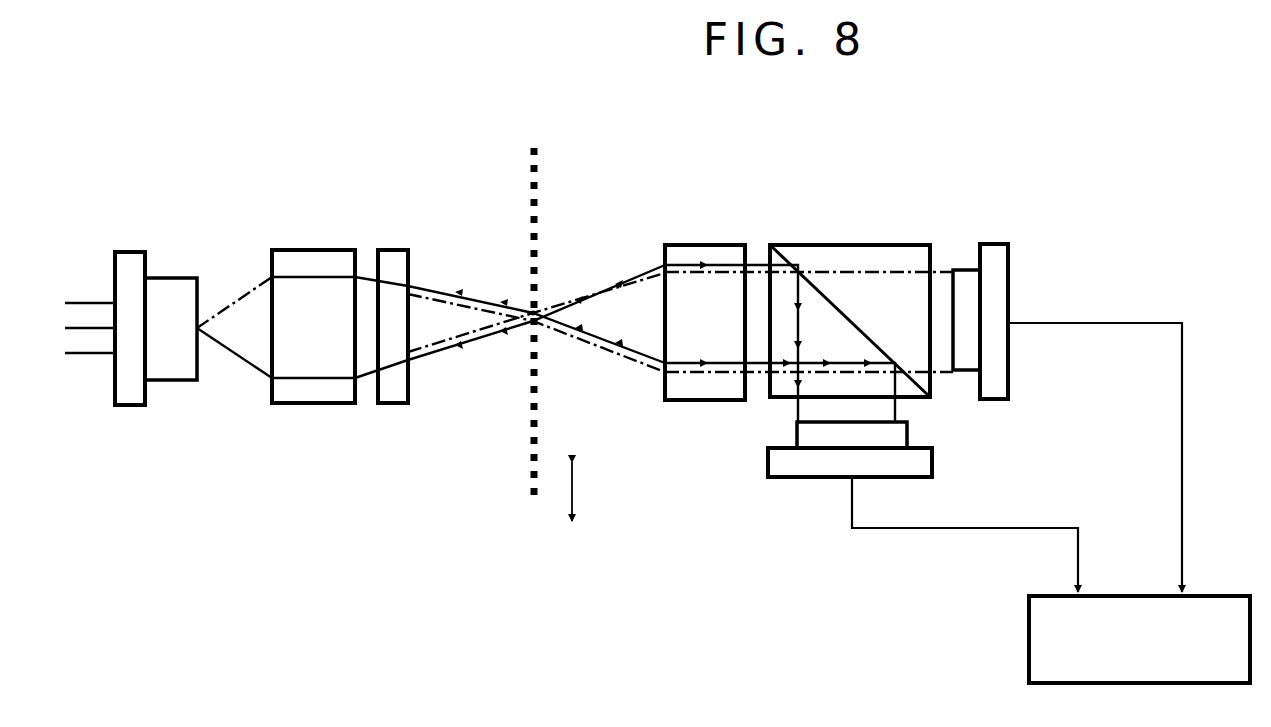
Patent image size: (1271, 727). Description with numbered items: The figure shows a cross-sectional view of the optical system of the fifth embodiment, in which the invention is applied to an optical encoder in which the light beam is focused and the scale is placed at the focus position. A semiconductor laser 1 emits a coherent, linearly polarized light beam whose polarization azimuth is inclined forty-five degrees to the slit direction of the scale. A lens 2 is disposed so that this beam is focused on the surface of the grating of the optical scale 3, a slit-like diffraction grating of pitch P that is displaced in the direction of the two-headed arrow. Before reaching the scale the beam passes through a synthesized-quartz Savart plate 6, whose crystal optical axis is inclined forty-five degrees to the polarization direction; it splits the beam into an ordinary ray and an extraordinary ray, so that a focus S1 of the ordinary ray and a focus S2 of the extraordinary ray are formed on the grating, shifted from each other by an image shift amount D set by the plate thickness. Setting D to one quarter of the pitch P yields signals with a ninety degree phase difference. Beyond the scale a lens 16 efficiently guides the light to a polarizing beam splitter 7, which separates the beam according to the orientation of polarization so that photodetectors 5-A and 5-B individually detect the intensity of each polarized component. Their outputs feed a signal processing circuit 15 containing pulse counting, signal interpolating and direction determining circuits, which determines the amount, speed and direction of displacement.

The semiconductor laser 1 is at (131, 258).
The lens 2 is at (305, 258).
The synthesized-quartz Savart plate 6 is at (392, 250).
The optical scale 3 is at (538, 178).
The focus of extraordinary ray S2 is at (528, 310).
The focus of ordinary ray S1 is at (528, 335).
The lens 16 is at (688, 243).
The polarizing beam splitter 7 is at (847, 250).
The photodetector 5-A is at (999, 276).
The photodetector 5-B is at (795, 468).
The signal processing circuit 15 is at (1030, 630).